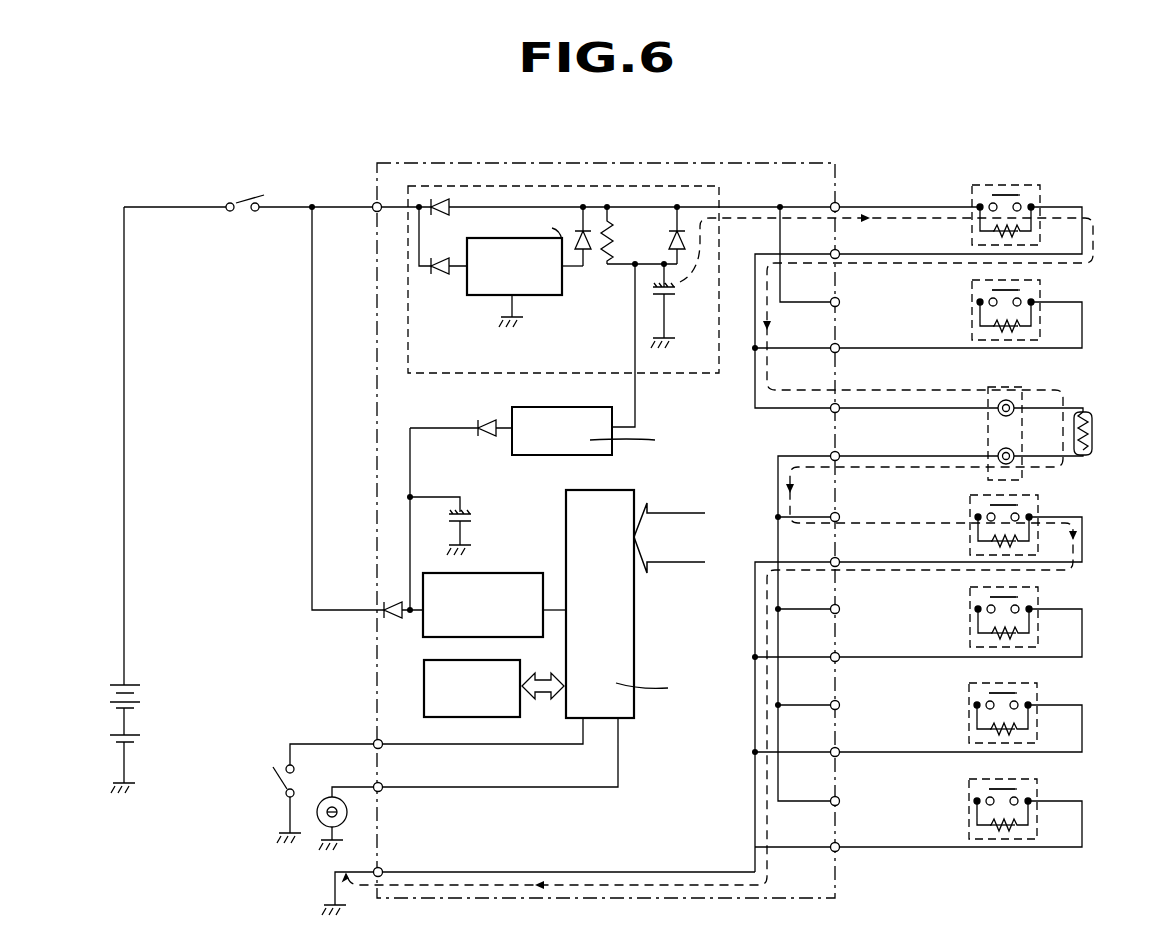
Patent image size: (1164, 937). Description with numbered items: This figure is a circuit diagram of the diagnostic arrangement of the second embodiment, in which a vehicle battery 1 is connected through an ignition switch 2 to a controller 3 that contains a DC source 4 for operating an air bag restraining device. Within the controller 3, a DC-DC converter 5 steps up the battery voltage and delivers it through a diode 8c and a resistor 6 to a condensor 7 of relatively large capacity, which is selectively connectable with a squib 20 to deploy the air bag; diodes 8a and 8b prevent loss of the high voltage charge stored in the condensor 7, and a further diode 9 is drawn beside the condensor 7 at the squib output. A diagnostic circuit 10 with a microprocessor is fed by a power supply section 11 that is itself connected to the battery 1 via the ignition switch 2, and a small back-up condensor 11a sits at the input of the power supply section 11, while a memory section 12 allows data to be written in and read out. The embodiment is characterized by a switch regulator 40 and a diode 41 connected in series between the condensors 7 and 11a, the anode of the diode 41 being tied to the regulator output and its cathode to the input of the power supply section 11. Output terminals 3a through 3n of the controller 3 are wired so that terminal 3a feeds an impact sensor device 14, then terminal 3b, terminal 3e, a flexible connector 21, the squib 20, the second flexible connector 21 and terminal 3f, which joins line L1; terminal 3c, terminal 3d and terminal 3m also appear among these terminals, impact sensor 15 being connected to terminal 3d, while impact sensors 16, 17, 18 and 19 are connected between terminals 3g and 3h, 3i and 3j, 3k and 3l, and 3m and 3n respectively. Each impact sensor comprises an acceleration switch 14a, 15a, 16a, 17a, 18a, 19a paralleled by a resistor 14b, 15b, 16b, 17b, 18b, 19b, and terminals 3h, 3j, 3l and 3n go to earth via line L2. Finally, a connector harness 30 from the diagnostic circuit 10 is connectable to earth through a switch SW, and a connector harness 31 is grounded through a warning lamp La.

The vehicle battery 1 is at (110, 718).
The ignition switch 2 is at (250, 195).
The controller 3 is at (720, 162).
The output terminal 3a is at (840, 207).
The output terminal 3b is at (840, 254).
The output terminal 3c is at (840, 302).
The output terminal 3d is at (840, 348).
The output terminal 3e is at (840, 408).
The output terminal 3f is at (840, 456).
The output terminal 3g is at (840, 517).
The output terminal 3h is at (840, 562).
The output terminal 3i is at (840, 609).
The output terminal 3j is at (840, 657).
The output terminal 3k is at (840, 705).
The output terminal 3l is at (840, 752).
The output terminal 3m is at (840, 801).
The output terminal 3n is at (840, 847).
The DC source 4 is at (476, 186).
The DC-DC converter 5 is at (470, 298).
The resistor 6 is at (608, 224).
The condensor 7 is at (672, 294).
The diode 8a is at (433, 202).
The diode 8b is at (431, 262).
The diode 8c is at (583, 270).
The diode 9 is at (667, 240).
The diagnostic circuit 10 is at (634, 610).
The power supply section 11 is at (495, 573).
The back-up condensor 11a is at (470, 516).
The memory section 12 is at (422, 672).
The impact sensor device 14 is at (1038, 188).
The acceleration switch 14a is at (993, 192).
The resistor 14b is at (992, 233).
The impact sensor 15 is at (1040, 288).
The acceleration switch 15a is at (992, 296).
The resistor 15b is at (992, 328).
The impact sensor 16 is at (1038, 510).
The acceleration switch 16a is at (990, 505).
The resistor 16b is at (990, 543).
The impact sensor 17 is at (1038, 596).
The acceleration switch 17a is at (990, 598).
The resistor 17b is at (990, 635).
The impact sensor 18 is at (1040, 700).
The acceleration switch 18a is at (989, 695).
The resistor 18b is at (989, 731).
The impact sensor 19 is at (1040, 797).
The acceleration switch 19a is at (989, 791).
The resistor 19b is at (989, 827).
The squib 20 is at (1093, 432).
The flexible connector 21 is at (1010, 400).
The connector harness 30 is at (372, 740).
The connector harness 31 is at (372, 783).
The switch regulator 40 is at (590, 404).
The diode 41 is at (487, 418).
The switch SW is at (282, 786).
The warning lamp La is at (318, 826).
The line L1 is at (778, 517).
The line L2 is at (778, 688).